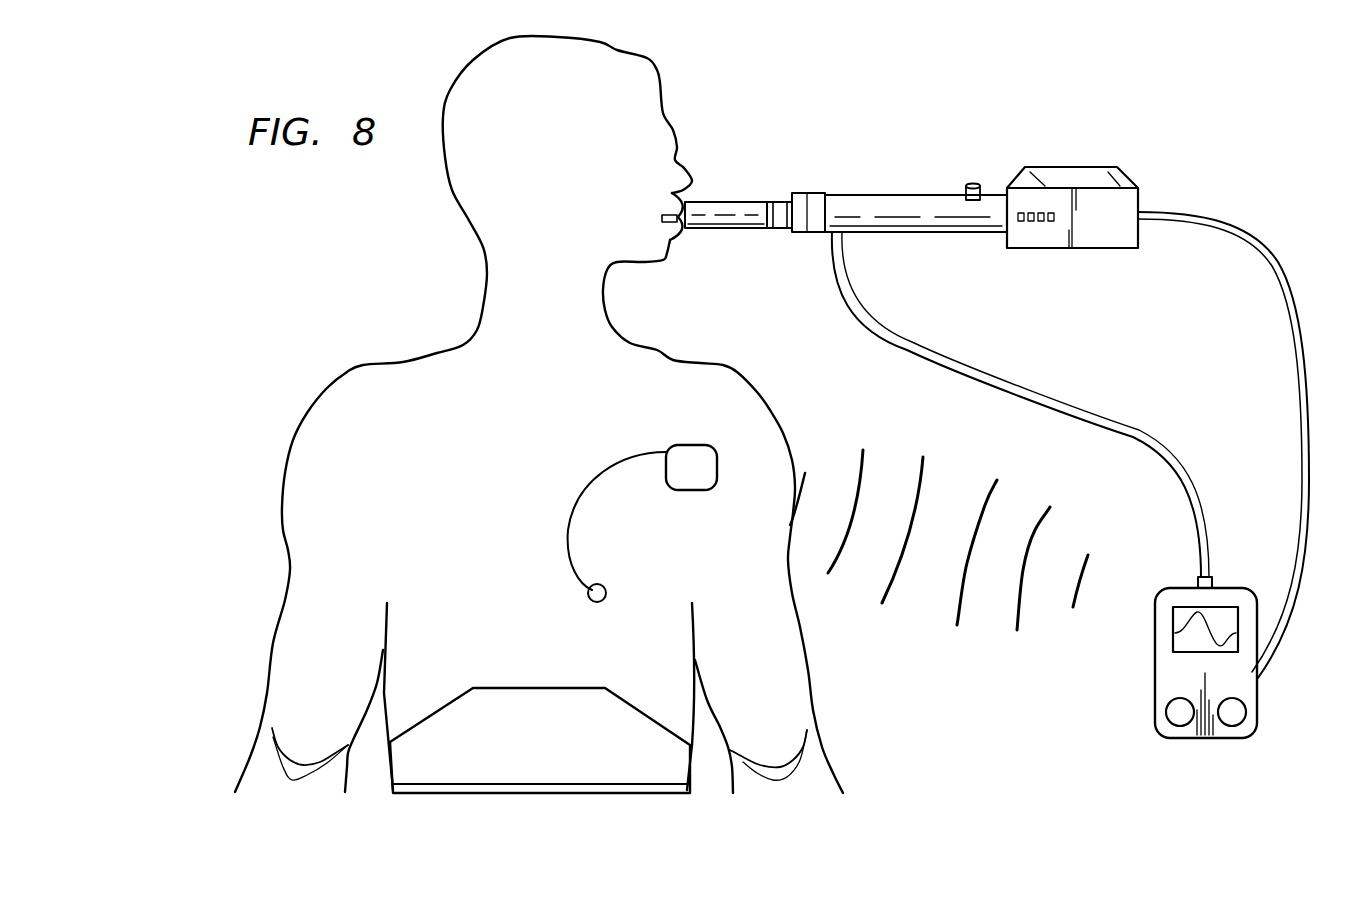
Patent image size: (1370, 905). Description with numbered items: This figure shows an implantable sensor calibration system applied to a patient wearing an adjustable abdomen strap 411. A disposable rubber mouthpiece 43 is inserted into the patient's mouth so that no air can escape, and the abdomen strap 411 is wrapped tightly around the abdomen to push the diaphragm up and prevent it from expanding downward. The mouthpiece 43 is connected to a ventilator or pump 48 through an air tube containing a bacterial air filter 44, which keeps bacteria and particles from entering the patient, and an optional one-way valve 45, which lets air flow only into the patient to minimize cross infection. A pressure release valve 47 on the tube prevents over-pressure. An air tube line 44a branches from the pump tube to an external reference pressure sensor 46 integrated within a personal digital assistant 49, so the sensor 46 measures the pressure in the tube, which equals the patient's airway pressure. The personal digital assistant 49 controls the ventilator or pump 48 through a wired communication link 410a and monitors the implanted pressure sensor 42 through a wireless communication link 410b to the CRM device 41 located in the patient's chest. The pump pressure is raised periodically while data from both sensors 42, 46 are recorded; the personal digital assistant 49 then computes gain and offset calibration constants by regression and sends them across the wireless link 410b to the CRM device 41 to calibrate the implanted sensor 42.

The CRM device 41 is at (715, 445).
The implanted pressure sensor 42 is at (590, 592).
The disposable mouthpiece 43 is at (737, 198).
The bacterial air filter 44 is at (775, 201).
The tube 44a is at (1016, 387).
The one-way valve 45 is at (817, 195).
The external reference pressure sensor 46 is at (1197, 580).
The pressure release valve 47 is at (968, 203).
The ventilator or pump 48 is at (1093, 250).
The personal digital assistant 49 is at (1215, 738).
The wired communication link 410a is at (1277, 293).
The wireless communication link 410b is at (845, 543).
The adjustable abdomen strap 411 is at (468, 777).